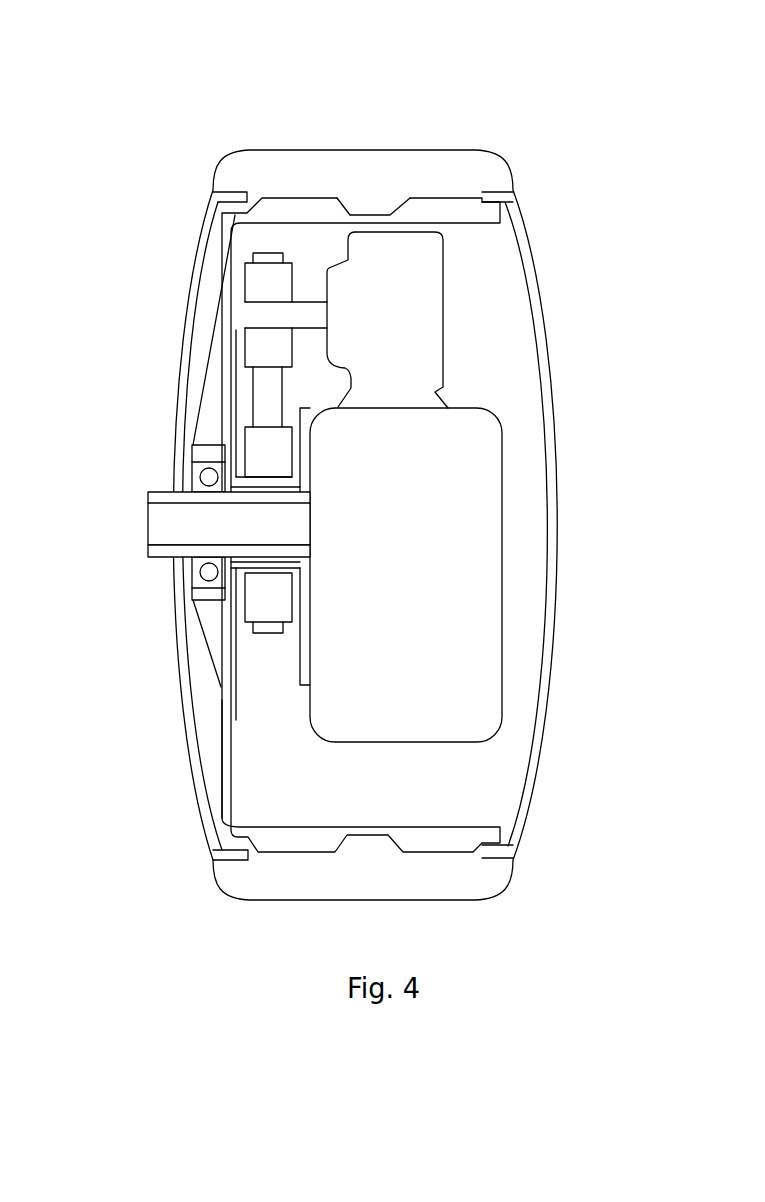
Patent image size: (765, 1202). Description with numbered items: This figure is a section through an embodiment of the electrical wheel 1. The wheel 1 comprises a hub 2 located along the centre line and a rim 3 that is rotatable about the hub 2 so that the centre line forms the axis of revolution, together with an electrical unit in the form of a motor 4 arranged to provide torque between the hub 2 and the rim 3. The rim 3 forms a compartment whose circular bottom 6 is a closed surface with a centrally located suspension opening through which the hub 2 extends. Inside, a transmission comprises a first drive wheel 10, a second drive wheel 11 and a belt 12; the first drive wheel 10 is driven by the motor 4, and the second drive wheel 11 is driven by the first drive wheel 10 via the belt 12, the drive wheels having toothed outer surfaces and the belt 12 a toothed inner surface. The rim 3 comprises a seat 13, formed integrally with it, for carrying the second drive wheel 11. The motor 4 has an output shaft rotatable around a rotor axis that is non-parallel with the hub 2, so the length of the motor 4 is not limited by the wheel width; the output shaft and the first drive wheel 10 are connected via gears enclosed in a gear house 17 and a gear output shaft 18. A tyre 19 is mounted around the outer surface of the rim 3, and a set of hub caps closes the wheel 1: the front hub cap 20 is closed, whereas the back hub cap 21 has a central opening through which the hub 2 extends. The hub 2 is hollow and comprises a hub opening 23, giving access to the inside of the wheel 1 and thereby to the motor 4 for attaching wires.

The electrical wheel 1 is at (353, 456).
The hub 2 is at (153, 548).
The rim 3 is at (361, 466).
The motor 4 is at (460, 573).
The circular bottom 6 is at (222, 773).
The first drive wheel 10 is at (264, 277).
The second drive wheel 11 is at (278, 603).
The belt 12 is at (266, 401).
The seat 13 is at (266, 474).
The gear house 17 is at (445, 307).
The gear output shaft 18 is at (273, 317).
The tyre 19 is at (373, 205).
The front hub cap 20 is at (560, 467).
The back hub cap 21 is at (183, 720).
The hub opening 23 is at (168, 523).